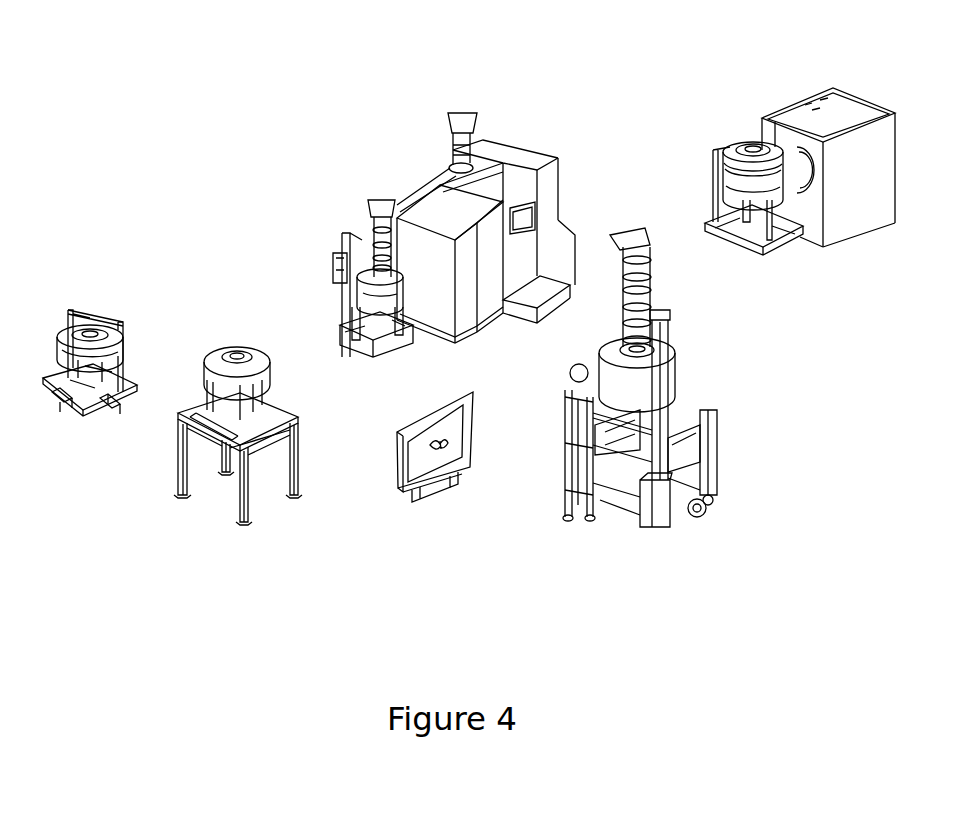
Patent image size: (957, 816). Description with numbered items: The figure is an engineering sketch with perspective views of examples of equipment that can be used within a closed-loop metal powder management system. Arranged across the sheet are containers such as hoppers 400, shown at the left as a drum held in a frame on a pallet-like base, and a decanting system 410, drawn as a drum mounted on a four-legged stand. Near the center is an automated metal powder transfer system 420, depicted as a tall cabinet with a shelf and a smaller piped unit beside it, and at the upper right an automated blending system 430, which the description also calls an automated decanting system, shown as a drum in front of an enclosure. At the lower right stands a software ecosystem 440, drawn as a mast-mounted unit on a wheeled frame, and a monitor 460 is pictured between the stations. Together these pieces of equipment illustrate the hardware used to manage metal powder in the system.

The hoppers 400 is at (110, 291).
The decanting system 410 is at (239, 322).
The automated metal powder transfer system 420 is at (503, 105).
The automated blending system 430 is at (813, 75).
The software ecosystem 440 is at (693, 321).
The display monitor 460 is at (409, 403).